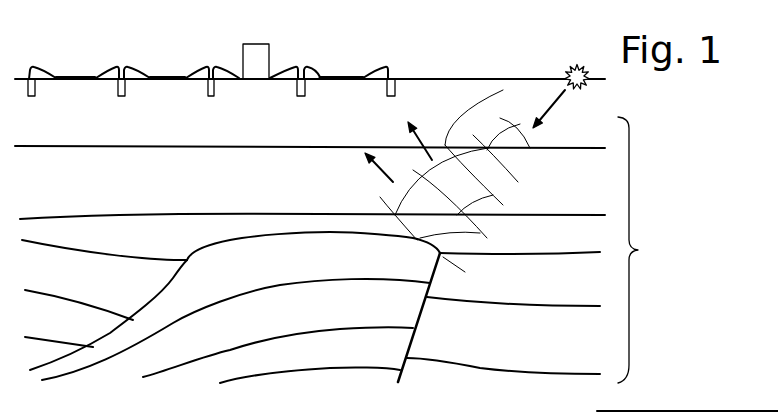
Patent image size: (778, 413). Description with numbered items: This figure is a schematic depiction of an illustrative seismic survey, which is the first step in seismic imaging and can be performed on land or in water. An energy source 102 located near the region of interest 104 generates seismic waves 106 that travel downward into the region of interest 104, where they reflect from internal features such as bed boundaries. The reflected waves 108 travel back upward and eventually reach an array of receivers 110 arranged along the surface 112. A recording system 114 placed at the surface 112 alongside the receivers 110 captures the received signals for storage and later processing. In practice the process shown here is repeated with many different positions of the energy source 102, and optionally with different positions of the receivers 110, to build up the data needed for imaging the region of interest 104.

The energy source 102 is at (567, 72).
The region of interest 104 is at (343, 250).
The seismic waves 106 is at (554, 112).
The reflected waves 108 is at (392, 150).
The receivers 110 is at (35, 90).
The surface 112 is at (458, 78).
The recording system 114 is at (243, 76).